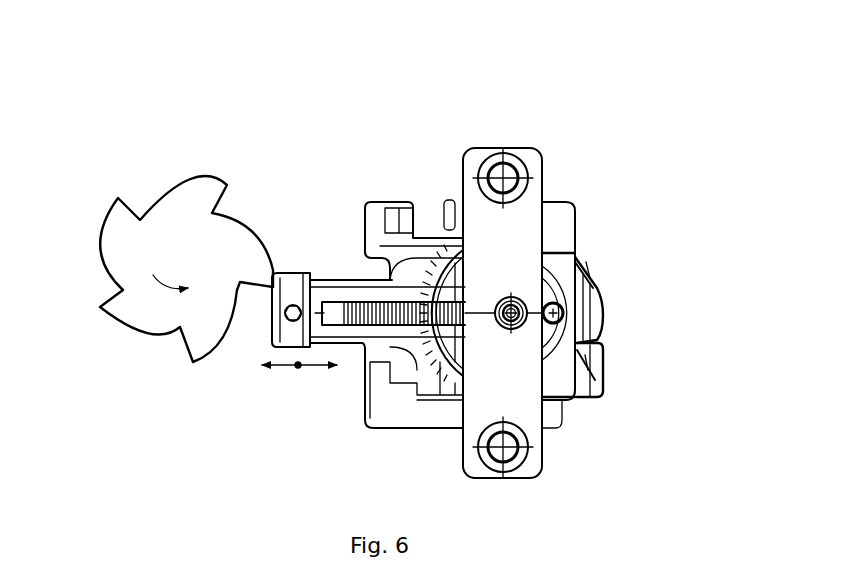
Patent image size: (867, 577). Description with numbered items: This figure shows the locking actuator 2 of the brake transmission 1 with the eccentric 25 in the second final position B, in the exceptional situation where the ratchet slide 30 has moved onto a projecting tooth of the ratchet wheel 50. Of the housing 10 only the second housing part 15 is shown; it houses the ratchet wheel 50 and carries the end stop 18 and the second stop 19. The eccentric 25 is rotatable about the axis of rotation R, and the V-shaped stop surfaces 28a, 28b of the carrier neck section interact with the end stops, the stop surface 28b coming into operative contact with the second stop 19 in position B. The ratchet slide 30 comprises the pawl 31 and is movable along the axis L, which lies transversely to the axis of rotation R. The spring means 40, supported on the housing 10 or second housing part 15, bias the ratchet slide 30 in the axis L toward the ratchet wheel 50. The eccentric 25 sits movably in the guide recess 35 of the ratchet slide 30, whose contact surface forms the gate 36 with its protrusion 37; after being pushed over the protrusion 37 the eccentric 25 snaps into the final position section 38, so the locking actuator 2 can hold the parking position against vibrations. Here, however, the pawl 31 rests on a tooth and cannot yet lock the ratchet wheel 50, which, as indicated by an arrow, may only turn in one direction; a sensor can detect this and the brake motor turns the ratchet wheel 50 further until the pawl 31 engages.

The brake transmission 1 is at (268, 78).
The locking actuator 2 is at (590, 125).
The housing 10 is at (532, 407).
The second housing part 15 is at (502, 313).
The end stop 18 is at (460, 337).
The second stop 19 is at (603, 352).
The eccentric 25 is at (428, 290).
The stop surface 28a is at (597, 282).
The stop surface 28b is at (585, 375).
The ratchet slide 30 is at (373, 283).
The pawl 31 is at (268, 343).
The guide recess 35 is at (452, 322).
The gate 36 is at (585, 385).
The protrusion 37 is at (554, 313).
The final position section 38 is at (595, 285).
The spring means 40 is at (398, 322).
The ratchet wheel 50 is at (122, 233).
The axis L is at (352, 298).
The axis of rotation R is at (522, 297).
The second final position B is at (418, 58).